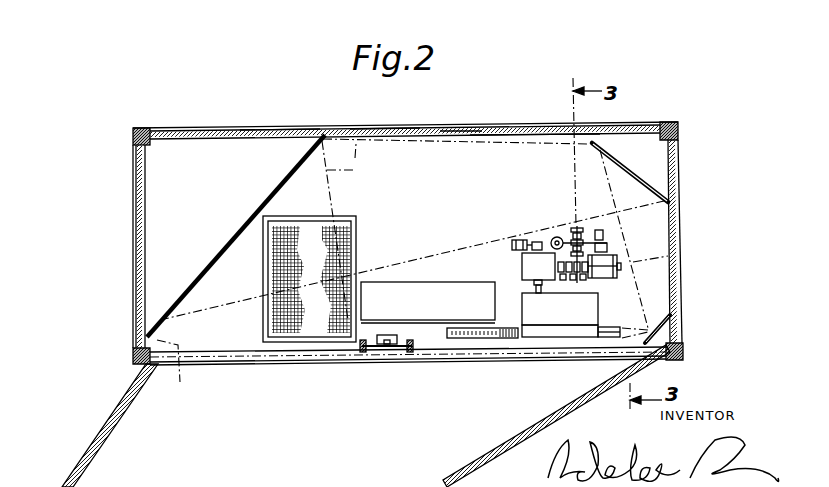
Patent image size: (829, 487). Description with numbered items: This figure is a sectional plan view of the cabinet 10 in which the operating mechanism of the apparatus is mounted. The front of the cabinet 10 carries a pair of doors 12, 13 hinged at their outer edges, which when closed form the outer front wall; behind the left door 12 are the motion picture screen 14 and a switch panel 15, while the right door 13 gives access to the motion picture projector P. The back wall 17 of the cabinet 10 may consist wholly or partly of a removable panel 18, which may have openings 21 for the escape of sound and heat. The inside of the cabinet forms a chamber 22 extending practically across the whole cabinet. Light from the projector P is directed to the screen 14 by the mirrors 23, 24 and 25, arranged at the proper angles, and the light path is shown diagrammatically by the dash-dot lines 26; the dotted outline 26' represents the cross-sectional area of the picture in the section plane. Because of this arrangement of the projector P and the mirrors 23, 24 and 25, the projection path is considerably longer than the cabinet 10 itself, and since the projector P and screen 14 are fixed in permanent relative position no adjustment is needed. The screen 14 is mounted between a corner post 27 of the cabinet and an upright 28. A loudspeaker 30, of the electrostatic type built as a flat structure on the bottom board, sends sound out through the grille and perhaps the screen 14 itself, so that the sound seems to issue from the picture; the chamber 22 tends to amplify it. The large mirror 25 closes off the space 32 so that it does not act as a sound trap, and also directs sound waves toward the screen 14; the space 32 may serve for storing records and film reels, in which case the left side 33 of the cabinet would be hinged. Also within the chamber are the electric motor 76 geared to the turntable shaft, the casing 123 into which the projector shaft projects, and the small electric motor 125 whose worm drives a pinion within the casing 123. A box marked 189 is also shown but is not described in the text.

The cabinet 10 is at (680, 146).
The left door 12 is at (100, 456).
The right door 13 is at (540, 420).
The motion picture screen 14 is at (244, 366).
The switch panel 15 is at (407, 352).
The back wall 17 is at (277, 127).
The panel 18 is at (378, 128).
The openings 21 is at (480, 129).
The chamber 22 is at (473, 170).
The mirror 23 is at (662, 329).
The mirror 24 is at (636, 175).
The large mirror 25 is at (288, 175).
The dash-dot lines 26 is at (444, 239).
The dotted outline 26' is at (542, 164).
The corner post 27 is at (136, 360).
The upright 28 is at (362, 352).
The loudspeaker 30 is at (308, 230).
The space 32 is at (200, 168).
The left side 33 is at (133, 185).
The electric motor 76 is at (604, 283).
The casing 123 is at (544, 267).
The small electric motor 125 is at (522, 242).
The housing box 189 is at (428, 302).
The motion picture projector P is at (520, 303).